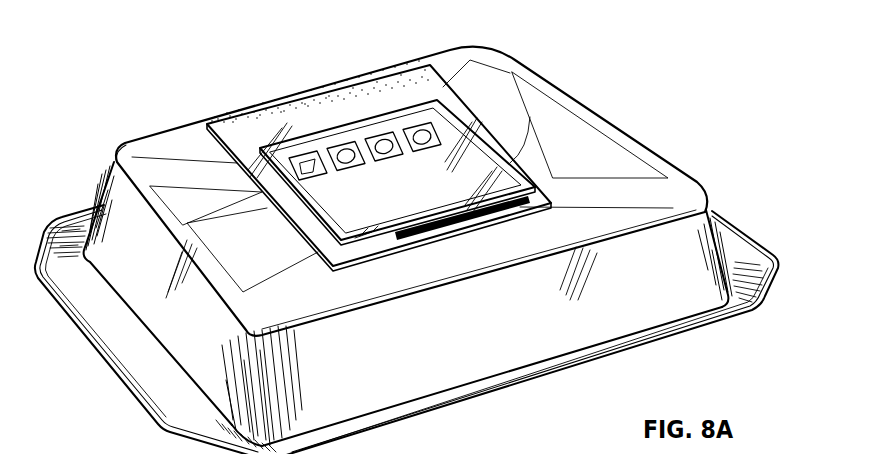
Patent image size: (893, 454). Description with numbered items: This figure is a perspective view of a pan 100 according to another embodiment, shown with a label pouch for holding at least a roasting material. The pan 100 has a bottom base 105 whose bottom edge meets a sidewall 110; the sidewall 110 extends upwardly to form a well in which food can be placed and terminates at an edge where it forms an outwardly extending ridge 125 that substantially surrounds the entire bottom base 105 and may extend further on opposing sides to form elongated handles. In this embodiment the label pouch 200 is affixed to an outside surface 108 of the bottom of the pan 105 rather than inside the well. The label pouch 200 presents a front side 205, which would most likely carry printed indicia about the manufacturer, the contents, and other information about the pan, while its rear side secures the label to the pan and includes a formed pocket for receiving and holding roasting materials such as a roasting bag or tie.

The pan 100 is at (423, 329).
The bottom base 105 is at (399, 230).
The outside surface 108 is at (133, 158).
The sidewall 110 is at (487, 370).
The ridge 125 is at (143, 382).
The label pouch 200 is at (287, 100).
The front side 205 is at (513, 160).